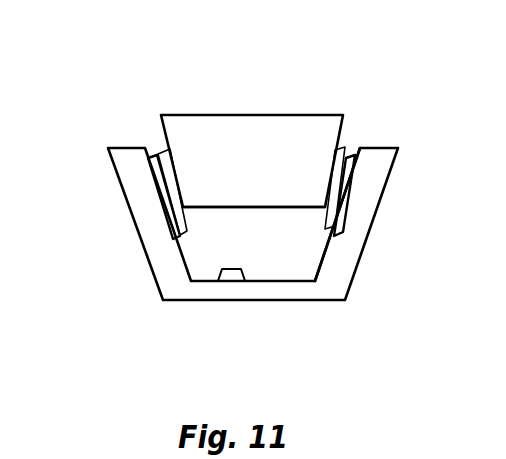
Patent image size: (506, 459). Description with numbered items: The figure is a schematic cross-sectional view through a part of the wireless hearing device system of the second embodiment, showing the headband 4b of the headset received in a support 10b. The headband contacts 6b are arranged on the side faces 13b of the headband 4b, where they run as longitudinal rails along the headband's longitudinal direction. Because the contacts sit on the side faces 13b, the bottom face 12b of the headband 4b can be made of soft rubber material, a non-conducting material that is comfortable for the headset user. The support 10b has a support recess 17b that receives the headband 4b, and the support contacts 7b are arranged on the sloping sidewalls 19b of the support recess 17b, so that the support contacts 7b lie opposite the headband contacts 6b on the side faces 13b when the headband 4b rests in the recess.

The headband 4b is at (248, 158).
The headband contacts 6b is at (342, 146).
The support contacts 7b is at (356, 171).
The support 10b is at (346, 256).
The bottom face 12b is at (238, 210).
The side faces 13b is at (167, 149).
The support recess 17b is at (244, 273).
The sloping sidewalls 19b is at (323, 255).